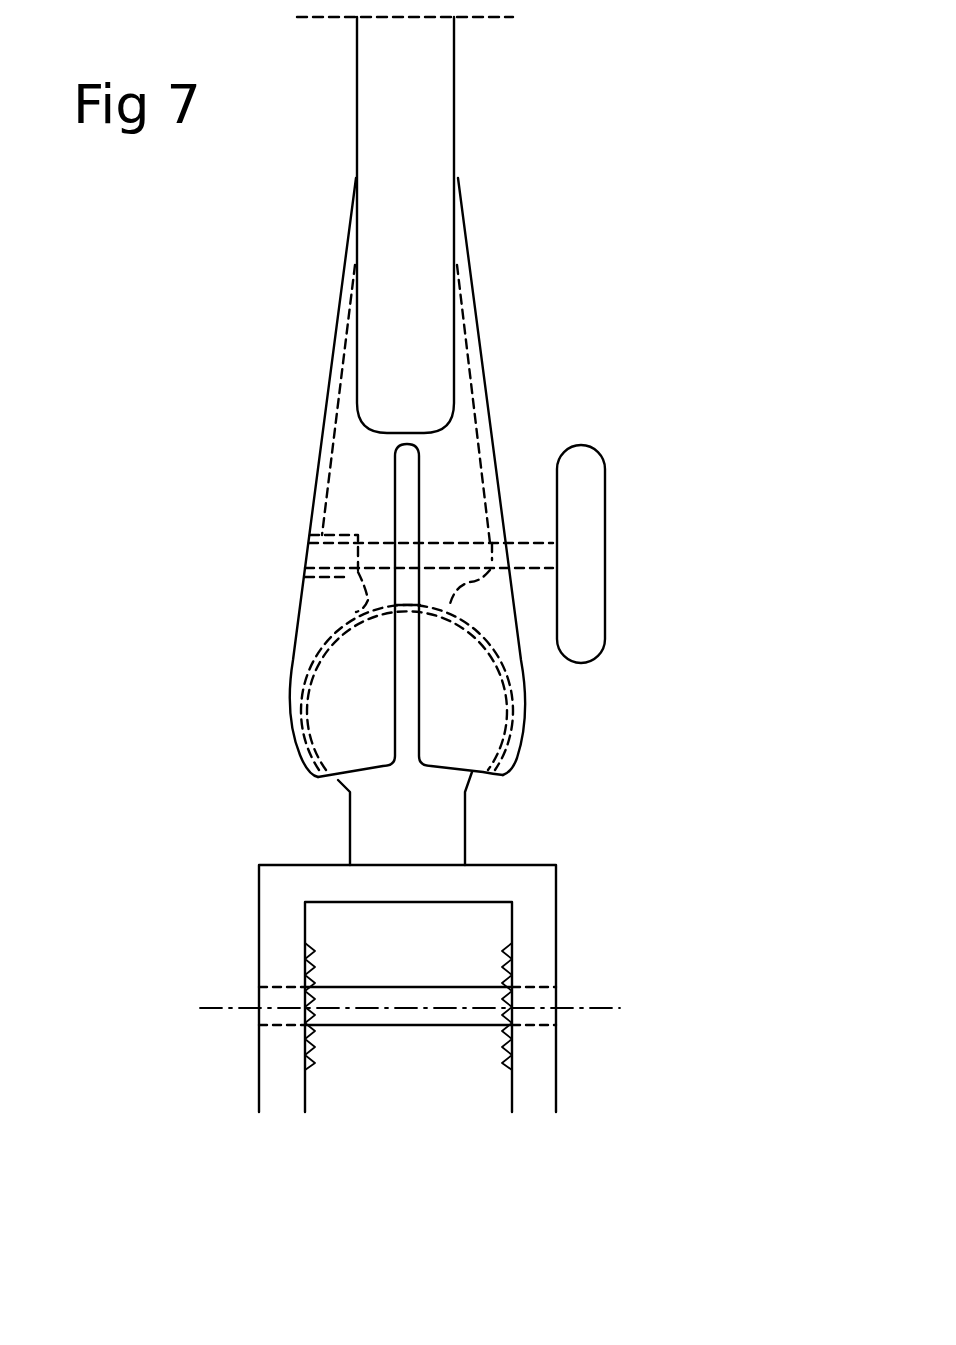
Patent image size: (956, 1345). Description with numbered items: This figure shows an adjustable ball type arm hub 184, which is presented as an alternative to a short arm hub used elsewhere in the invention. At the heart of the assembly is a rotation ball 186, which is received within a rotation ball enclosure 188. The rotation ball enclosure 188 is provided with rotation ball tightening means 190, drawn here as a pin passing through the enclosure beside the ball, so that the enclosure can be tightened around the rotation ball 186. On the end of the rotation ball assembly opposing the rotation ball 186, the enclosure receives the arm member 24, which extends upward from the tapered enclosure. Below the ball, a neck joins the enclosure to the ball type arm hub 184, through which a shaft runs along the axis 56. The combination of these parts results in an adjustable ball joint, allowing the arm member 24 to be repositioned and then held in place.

The arm member 24 is at (418, 155).
The rotation ball enclosure 188 is at (483, 330).
The rotation ball tightening means 190 is at (538, 557).
The rotation ball 186 is at (453, 705).
The ball type arm hub 184 is at (533, 900).
The axis 56 is at (597, 1015).